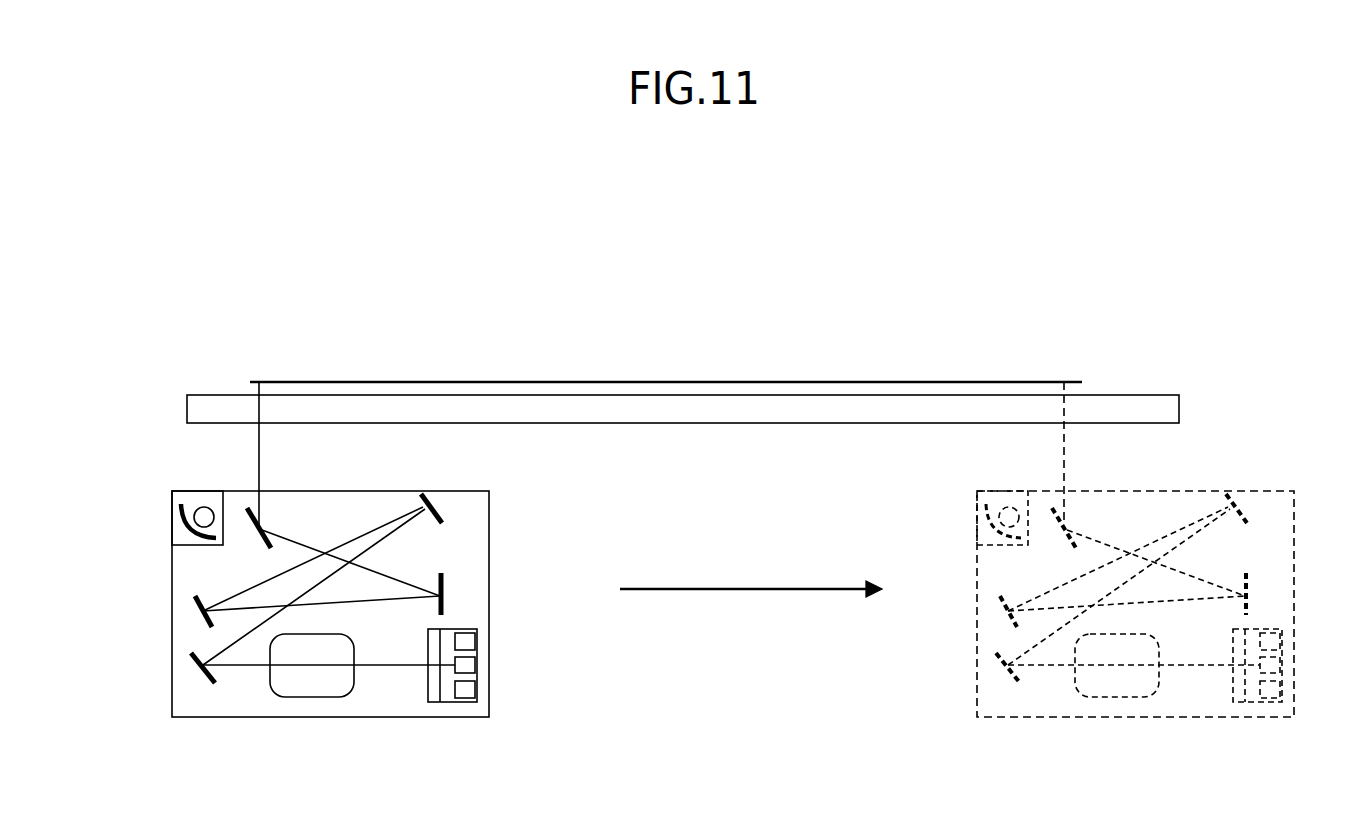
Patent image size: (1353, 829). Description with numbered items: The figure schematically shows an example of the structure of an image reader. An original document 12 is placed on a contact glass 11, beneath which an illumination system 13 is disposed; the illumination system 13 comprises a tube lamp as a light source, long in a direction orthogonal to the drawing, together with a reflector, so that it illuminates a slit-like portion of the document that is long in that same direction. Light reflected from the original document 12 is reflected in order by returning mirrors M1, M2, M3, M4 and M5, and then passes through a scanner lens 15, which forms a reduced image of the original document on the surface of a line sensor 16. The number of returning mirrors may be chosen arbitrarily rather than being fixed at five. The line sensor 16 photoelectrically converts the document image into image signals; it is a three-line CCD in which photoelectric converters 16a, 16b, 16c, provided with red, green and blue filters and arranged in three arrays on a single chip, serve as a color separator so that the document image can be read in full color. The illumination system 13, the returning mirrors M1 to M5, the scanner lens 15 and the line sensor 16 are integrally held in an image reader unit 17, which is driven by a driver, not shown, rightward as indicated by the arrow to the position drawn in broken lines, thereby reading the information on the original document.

The contact glass 11 is at (214, 395).
The original document 12 is at (350, 382).
The illumination system 13 is at (190, 491).
The scanner lens 15 is at (318, 698).
The line sensor 16 is at (452, 703).
The photoelectric converter 16a is at (468, 642).
The photoelectric converter 16b is at (468, 665).
The photoelectric converter 16c is at (468, 689).
The image reader unit 17 is at (214, 718).
The returning mirror M1 is at (263, 547).
The returning mirror M2 is at (441, 516).
The returning mirror M3 is at (205, 625).
The returning mirror M4 is at (444, 587).
The returning mirror M5 is at (205, 684).